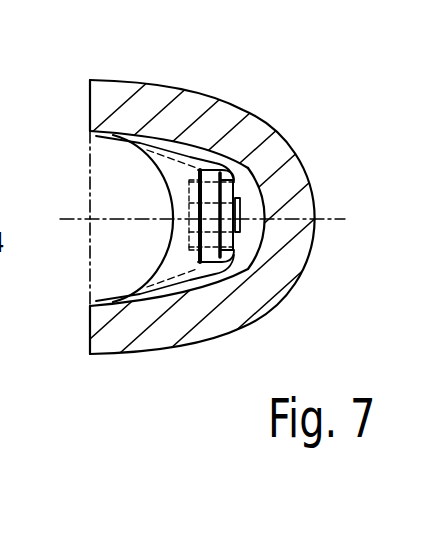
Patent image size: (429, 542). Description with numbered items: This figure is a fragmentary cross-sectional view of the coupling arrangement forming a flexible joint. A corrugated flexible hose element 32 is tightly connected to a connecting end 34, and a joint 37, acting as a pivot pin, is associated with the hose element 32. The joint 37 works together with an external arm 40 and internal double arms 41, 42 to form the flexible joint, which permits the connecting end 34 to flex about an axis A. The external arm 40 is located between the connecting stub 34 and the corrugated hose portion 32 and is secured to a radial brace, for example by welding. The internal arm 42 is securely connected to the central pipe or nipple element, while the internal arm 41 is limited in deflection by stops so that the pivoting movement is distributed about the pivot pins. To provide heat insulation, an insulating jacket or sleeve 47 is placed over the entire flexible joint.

The flexible hose element 32 is at (148, 273).
The connecting end 34 is at (110, 246).
The joint 37 is at (264, 225).
The external arm 40 is at (207, 260).
The internal double arm 41 is at (251, 170).
The internal double arm 42 is at (207, 165).
The insulating jacket or sleeve 47 is at (291, 143).
The axis A is at (330, 214).